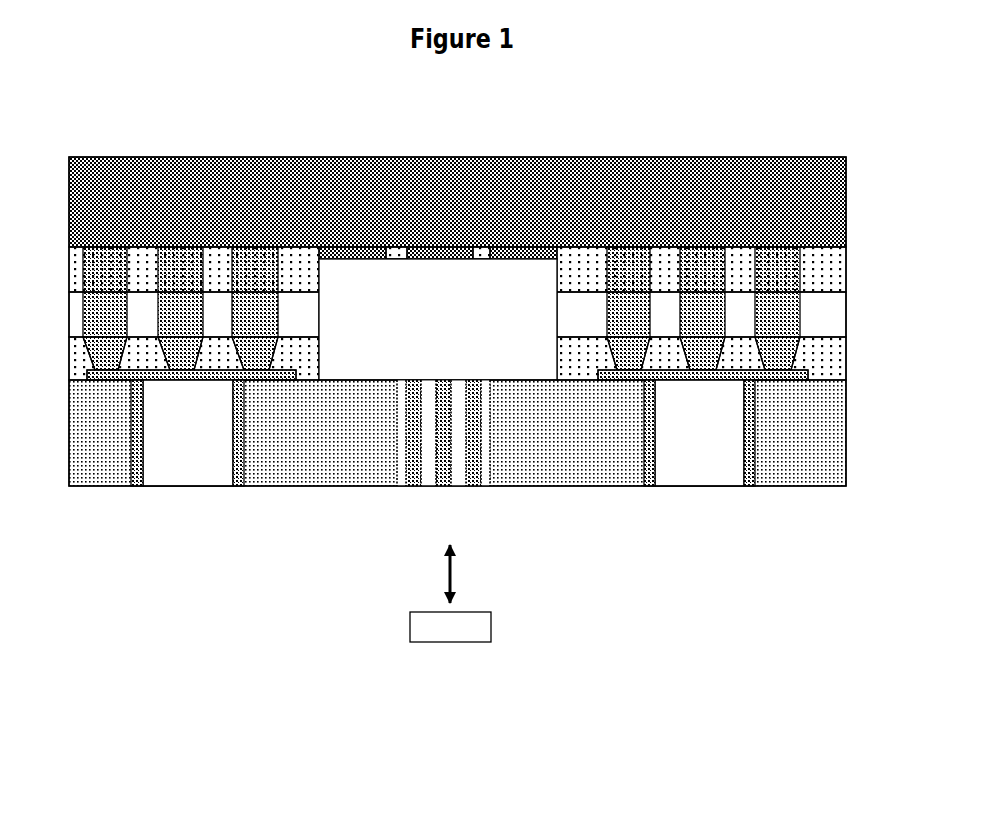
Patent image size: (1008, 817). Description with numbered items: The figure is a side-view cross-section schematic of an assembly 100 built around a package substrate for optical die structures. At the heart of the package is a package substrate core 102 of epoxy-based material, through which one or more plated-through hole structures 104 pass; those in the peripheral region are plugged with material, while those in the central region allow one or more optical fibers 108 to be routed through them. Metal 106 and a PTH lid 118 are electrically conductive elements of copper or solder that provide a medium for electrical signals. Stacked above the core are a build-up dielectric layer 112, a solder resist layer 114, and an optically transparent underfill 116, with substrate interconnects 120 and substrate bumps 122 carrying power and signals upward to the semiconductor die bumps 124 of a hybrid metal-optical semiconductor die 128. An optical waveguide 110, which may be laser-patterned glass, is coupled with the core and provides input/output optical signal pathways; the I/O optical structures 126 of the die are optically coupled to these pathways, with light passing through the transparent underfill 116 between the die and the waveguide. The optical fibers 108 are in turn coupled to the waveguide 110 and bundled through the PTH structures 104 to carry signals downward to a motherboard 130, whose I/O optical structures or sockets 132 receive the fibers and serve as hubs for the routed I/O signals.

The assembly 100 is at (656, 114).
The package substrate core 102 is at (457, 433).
The plated-through hole structure 104 is at (428, 489).
The metal 106 is at (240, 488).
The optical fiber 108 is at (406, 488).
The optical waveguide 110 is at (438, 319).
The build-up dielectric layer 112 is at (74, 357).
The solder resist layer 114 is at (74, 311).
The underfill 116 is at (74, 271).
The PTH lid 118 is at (810, 376).
The substrate interconnects 120 is at (792, 353).
The substrate bumps 122 is at (800, 312).
The semiconductor die bumps 124 is at (803, 272).
The I/O optical structures 126 is at (396, 249).
The semiconductor die 128 is at (457, 202).
The motherboard 130 is at (457, 668).
The I/O optical structures or sockets 132 is at (450, 627).